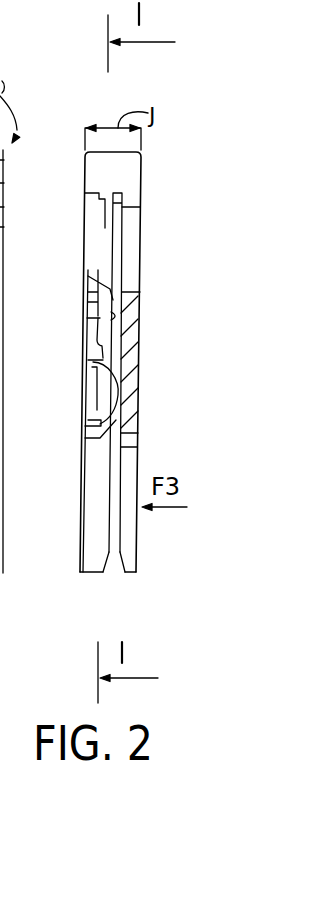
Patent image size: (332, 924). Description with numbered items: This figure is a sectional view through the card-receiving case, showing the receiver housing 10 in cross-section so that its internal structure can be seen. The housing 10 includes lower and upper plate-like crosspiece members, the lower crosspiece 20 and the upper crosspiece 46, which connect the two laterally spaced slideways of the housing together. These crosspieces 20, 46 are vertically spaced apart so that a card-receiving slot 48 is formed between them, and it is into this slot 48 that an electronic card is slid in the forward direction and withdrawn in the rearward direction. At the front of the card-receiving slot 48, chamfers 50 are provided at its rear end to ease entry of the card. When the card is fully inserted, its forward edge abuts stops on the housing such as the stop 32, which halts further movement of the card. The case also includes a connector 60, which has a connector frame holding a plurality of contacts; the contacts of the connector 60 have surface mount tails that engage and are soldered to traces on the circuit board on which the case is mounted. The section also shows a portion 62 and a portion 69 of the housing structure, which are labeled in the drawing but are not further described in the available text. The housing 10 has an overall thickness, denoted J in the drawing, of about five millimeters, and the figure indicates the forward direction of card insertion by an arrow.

The receiver housing 10 is at (148, 241).
The lower crosspiece 20 is at (126, 357).
The stop 32 is at (105, 224).
The upper crosspiece 46 is at (152, 433).
The card-receiving slot 48 is at (113, 556).
The chamfers 50 is at (102, 571).
The connector 60 is at (70, 382).
The insulating body portion 62 is at (140, 311).
The inner wall 69 is at (81, 537).